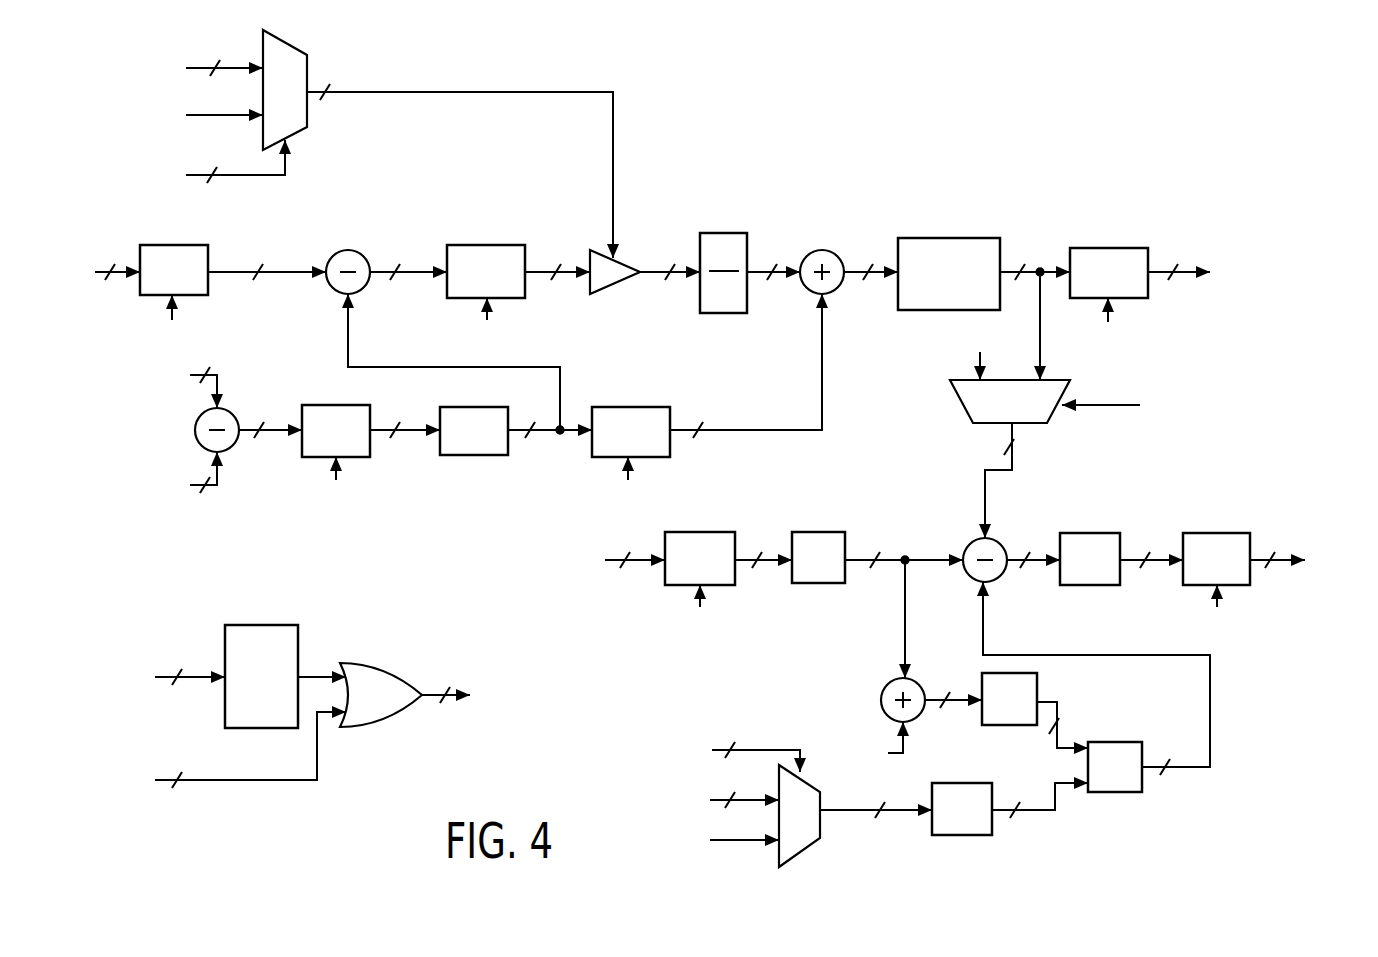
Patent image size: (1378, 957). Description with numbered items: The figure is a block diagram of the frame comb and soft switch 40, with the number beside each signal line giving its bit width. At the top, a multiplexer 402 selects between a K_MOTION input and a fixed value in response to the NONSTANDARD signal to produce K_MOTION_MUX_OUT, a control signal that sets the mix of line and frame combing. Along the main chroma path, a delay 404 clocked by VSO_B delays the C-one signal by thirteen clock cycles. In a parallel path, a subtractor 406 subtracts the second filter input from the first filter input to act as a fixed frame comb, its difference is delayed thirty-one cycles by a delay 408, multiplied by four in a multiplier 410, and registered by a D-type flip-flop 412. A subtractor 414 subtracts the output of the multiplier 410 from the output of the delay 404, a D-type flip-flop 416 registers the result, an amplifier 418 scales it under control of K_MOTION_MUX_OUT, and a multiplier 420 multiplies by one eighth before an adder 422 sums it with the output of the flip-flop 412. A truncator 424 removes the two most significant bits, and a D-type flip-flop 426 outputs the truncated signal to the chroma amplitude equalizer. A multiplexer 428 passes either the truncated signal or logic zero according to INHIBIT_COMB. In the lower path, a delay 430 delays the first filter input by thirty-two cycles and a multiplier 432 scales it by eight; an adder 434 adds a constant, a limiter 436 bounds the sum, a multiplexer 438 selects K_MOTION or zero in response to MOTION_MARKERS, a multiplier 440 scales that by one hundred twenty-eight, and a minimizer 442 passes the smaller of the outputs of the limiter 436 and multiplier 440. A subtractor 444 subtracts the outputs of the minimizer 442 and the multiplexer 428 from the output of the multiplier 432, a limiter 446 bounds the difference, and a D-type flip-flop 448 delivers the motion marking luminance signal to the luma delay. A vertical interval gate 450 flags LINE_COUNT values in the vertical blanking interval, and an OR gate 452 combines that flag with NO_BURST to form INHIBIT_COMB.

The frame comb and soft switch 40 is at (1144, 93).
The multiplexer 402 is at (310, 133).
The delay 404 is at (182, 245).
The subtractor 406 is at (187, 430).
The delay 408 is at (313, 405).
The multiplier 410 is at (466, 456).
The D-type flip-flop 412 is at (640, 406).
The subtractor 414 is at (350, 248).
The D-type flip-flop 416 is at (480, 244).
The amplifier 418 is at (612, 296).
The multiplier 420 is at (722, 232).
The adder 422 is at (824, 250).
The truncator 424 is at (930, 238).
The D-type flip-flop 426 is at (1110, 248).
The multiplexer 428 is at (958, 400).
The delay 430 is at (665, 583).
The multiplier 432 is at (820, 532).
The adder 434 is at (881, 690).
The limiter 436 is at (1037, 683).
The multiplexer 438 is at (822, 845).
The multiplier 440 is at (985, 836).
The minimizer 442 is at (1120, 793).
The subtractor 444 is at (969, 543).
The limiter 446 is at (1084, 533).
The D-type flip-flop 448 is at (1209, 533).
The vertical interval gate 450 is at (239, 625).
The OR gate 452 is at (366, 658).